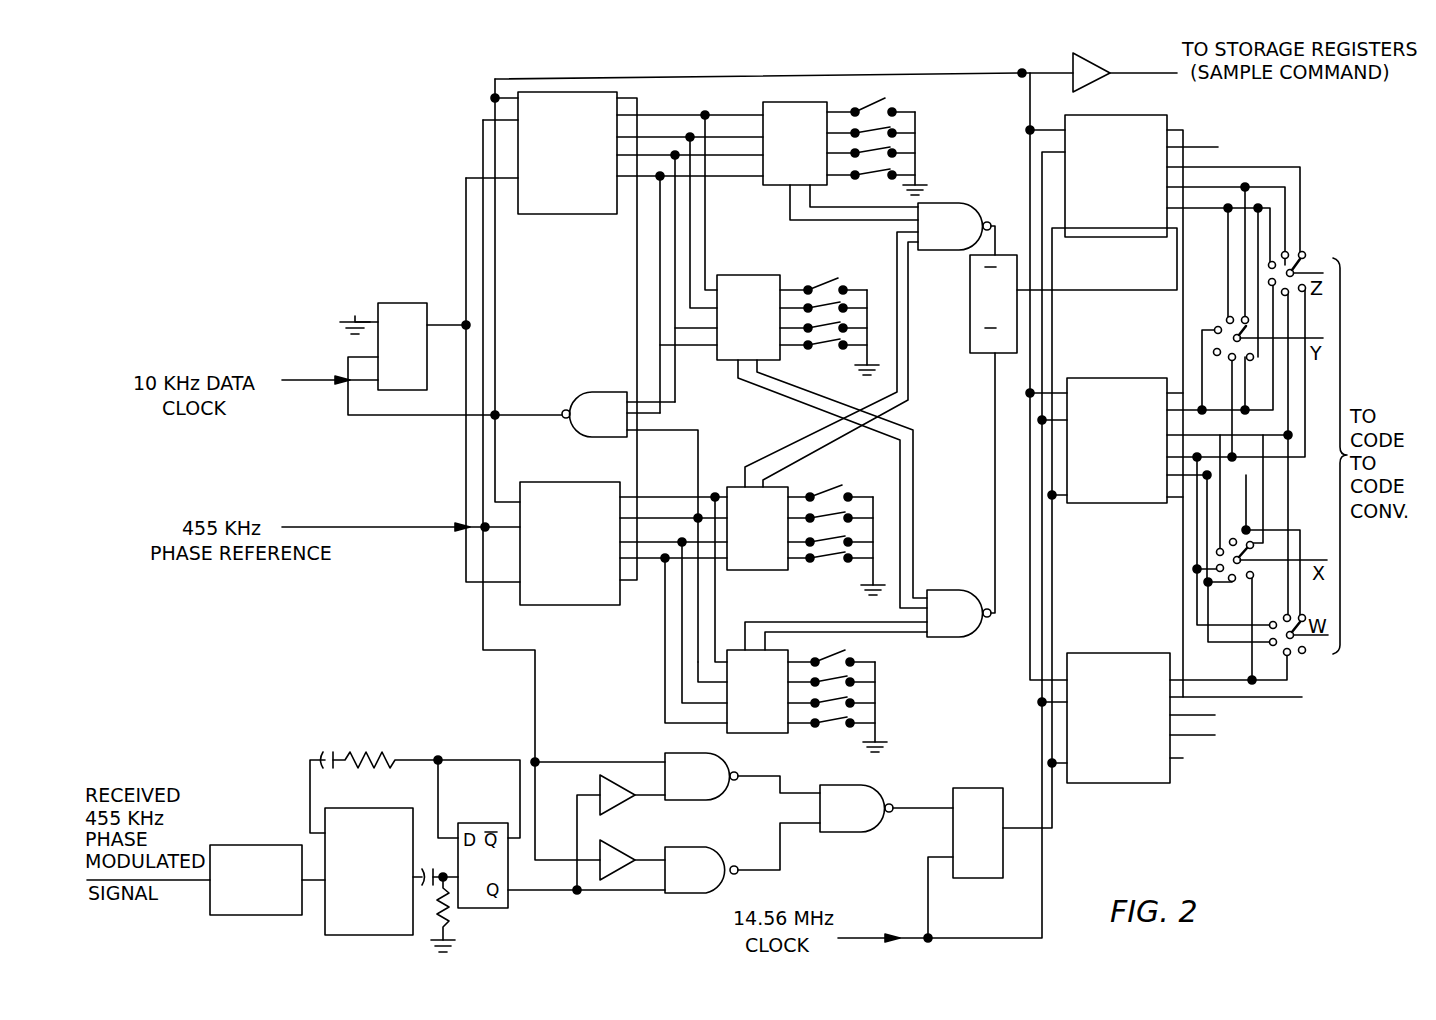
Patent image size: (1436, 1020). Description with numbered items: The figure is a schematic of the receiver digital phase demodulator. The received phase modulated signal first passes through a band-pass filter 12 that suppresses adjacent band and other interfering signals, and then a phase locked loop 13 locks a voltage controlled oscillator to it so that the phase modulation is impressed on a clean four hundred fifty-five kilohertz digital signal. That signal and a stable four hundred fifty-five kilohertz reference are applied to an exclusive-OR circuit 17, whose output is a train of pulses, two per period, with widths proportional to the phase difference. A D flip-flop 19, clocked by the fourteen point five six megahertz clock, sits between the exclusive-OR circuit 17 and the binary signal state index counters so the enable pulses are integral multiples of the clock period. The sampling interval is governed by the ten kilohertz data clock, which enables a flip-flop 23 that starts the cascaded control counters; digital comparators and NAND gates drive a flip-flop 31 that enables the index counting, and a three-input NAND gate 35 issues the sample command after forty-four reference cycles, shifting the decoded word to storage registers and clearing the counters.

The filter 12 is at (262, 917).
The phase locked loop 13 is at (362, 937).
The exclusive-OR circuit 17 is at (776, 823).
The D flip-flop 19 is at (982, 788).
The flip-flop 23 is at (396, 303).
The flip-flop 31 is at (970, 292).
The three-input NAND gate 35 is at (630, 527).